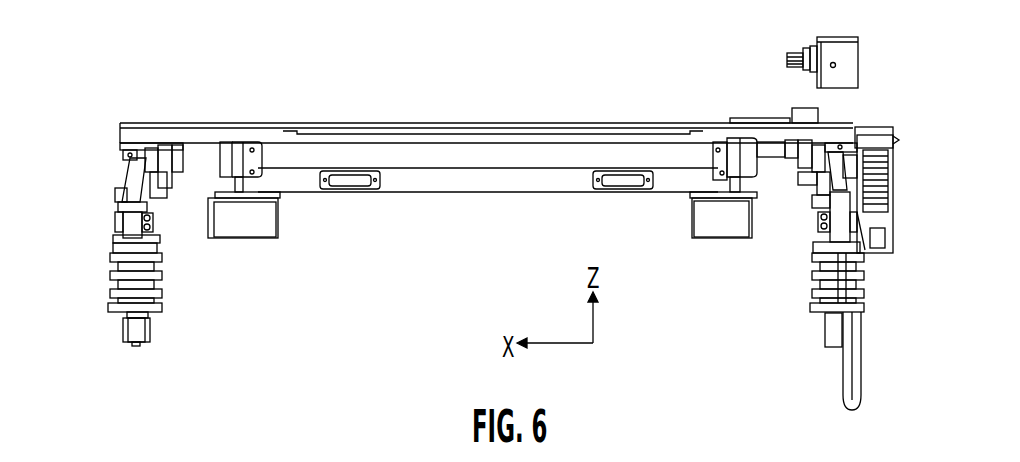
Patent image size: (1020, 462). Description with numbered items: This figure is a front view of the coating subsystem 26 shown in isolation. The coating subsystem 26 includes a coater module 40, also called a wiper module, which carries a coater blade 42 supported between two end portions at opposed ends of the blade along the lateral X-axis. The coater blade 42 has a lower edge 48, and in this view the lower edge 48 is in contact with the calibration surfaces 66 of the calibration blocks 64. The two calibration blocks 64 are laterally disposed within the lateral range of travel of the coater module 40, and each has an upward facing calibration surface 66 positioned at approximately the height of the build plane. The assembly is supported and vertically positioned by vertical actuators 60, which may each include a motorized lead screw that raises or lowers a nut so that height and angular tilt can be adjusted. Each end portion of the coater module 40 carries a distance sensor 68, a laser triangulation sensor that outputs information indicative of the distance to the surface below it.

The coating subsystem 26 is at (508, 54).
The coater module 40 is at (370, 143).
The coater blade 42 is at (412, 192).
The lower edge 48 is at (321, 194).
The vertical actuator 60 is at (115, 250).
The calibration block 64 is at (236, 226).
The calibration surface 66 is at (195, 142).
The distance sensor 68 is at (232, 142).